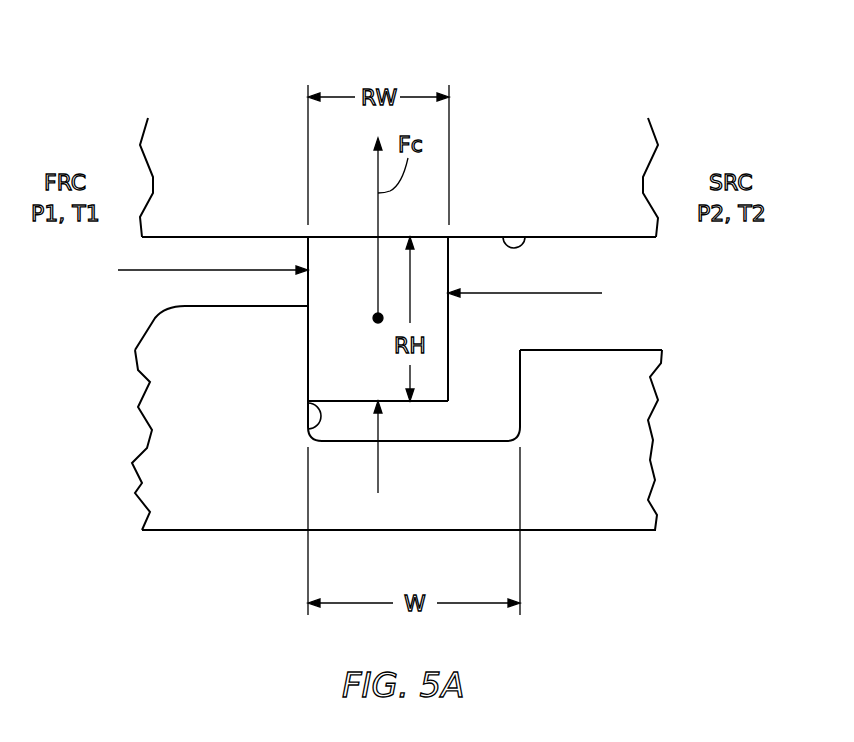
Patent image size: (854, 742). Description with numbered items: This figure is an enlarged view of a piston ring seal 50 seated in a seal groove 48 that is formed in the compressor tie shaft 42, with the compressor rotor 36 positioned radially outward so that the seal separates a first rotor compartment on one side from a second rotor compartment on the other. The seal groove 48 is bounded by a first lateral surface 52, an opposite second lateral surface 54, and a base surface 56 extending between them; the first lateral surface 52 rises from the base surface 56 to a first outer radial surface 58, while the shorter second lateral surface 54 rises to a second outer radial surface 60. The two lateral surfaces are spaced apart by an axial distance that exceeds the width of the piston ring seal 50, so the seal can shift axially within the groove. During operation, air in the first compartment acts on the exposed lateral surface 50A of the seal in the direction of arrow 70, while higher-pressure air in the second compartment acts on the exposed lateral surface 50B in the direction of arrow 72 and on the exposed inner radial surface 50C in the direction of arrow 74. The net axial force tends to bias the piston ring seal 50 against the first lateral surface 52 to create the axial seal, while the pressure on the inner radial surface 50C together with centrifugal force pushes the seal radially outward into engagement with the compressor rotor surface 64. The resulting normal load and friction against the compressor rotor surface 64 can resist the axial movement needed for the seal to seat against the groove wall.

The compressor rotor 36 is at (615, 135).
The tie shaft 42 is at (595, 542).
The seal groove 48 is at (456, 462).
The piston ring seal 50 is at (410, 369).
The lateral surface of the piston ring seal 50A is at (308, 288).
The lateral surface of the piston ring seal 50B is at (450, 369).
The inner radial surface of the piston ring seal 50C is at (350, 403).
The first lateral surface 52 is at (312, 430).
The second lateral surface 54 is at (518, 360).
The base surface 56 is at (478, 437).
The first outer radial surface 58 is at (245, 306).
The second outer radial surface 60 is at (617, 350).
The compressor rotor surface 64 is at (525, 237).
The arrow 70 is at (143, 273).
The arrow 72 is at (568, 293).
The arrow 74 is at (378, 476).